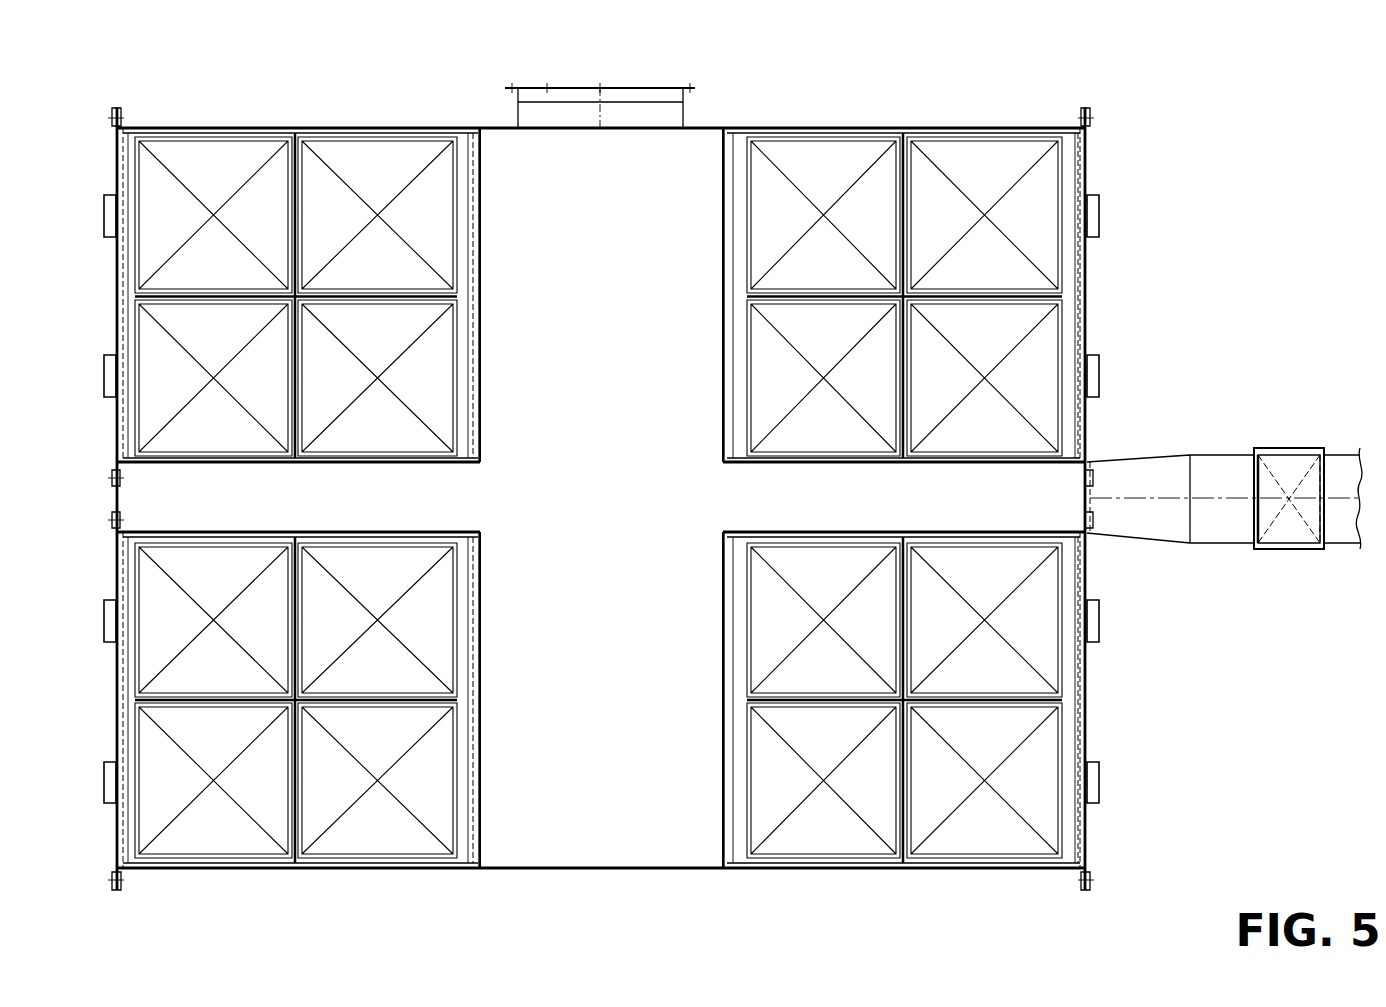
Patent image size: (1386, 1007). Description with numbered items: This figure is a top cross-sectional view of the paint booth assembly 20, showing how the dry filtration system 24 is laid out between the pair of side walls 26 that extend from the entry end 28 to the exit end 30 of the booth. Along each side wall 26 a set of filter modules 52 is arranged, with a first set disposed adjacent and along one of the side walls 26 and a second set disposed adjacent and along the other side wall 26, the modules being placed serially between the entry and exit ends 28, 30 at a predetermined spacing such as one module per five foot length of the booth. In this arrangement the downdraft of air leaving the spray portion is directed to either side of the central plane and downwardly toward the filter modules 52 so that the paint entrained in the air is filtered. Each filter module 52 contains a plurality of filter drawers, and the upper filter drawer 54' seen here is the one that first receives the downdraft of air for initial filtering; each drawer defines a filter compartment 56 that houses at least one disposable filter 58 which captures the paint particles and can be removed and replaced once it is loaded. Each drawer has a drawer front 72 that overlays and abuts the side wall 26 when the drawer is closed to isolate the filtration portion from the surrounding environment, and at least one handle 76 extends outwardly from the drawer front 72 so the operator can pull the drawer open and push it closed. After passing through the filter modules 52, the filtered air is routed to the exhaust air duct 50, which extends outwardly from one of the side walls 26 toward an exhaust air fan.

The paint booth assembly 20 is at (1175, 88).
The dry filtration system 24 is at (183, 128).
The side walls 26 is at (1090, 495).
The entry end 28 is at (600, 870).
The exit end 30 is at (703, 128).
The exhaust air duct 50 is at (1170, 545).
The filter module 52 is at (480, 207).
The upper filter drawer 54' is at (627, 498).
The filter compartment 56 is at (480, 235).
The disposable filter 58 is at (293, 205).
The drawer front 72 is at (1087, 167).
The handle 76 is at (1100, 228).